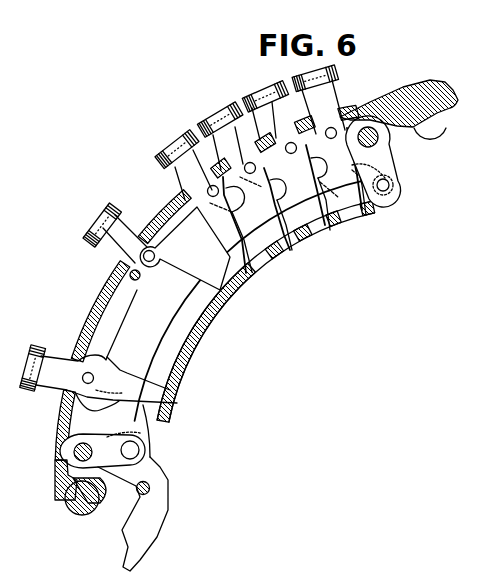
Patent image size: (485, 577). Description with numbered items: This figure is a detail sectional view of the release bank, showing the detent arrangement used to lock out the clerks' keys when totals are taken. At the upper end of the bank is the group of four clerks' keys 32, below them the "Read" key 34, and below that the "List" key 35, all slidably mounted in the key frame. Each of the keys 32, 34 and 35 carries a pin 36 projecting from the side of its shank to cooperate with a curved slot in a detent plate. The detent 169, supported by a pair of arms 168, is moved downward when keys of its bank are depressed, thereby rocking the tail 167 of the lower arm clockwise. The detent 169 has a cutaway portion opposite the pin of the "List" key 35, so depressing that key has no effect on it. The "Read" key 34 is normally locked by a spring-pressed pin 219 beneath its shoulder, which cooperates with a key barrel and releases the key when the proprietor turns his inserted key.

The clerks' keys 32 is at (293, 80).
The Read key 34 is at (100, 218).
The List key 35 is at (38, 346).
The pin 36 is at (146, 251).
The tail 167 is at (155, 513).
The arms 168 is at (384, 151).
The detent 169 is at (167, 318).
The spring-pressed pin 219 is at (133, 281).